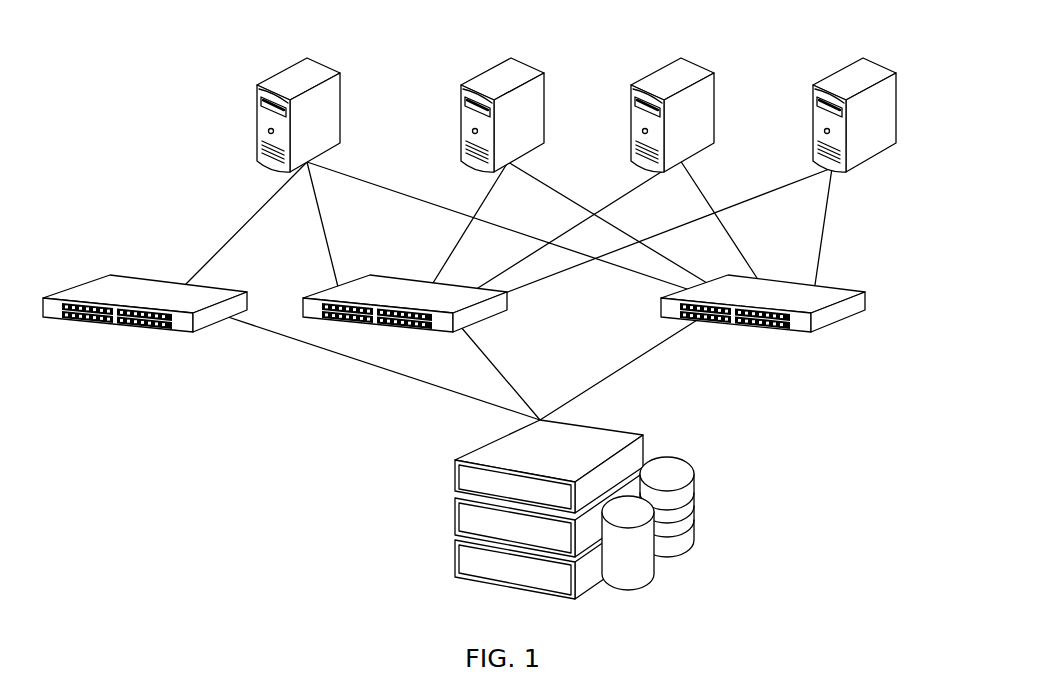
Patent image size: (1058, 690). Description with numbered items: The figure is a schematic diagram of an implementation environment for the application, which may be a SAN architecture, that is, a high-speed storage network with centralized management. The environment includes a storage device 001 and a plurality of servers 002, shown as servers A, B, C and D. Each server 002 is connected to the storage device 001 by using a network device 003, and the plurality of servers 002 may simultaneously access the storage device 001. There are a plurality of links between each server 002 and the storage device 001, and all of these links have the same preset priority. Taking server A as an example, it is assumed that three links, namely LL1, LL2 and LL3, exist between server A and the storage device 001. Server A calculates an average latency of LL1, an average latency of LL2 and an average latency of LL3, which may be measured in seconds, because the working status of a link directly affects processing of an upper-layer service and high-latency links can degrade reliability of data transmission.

The storage device 001 is at (643, 447).
The server 002 is at (608, 86).
The network device 003 is at (866, 291).
The link LL1 is at (246, 223).
The link LL2 is at (307, 224).
The link LL3 is at (498, 226).